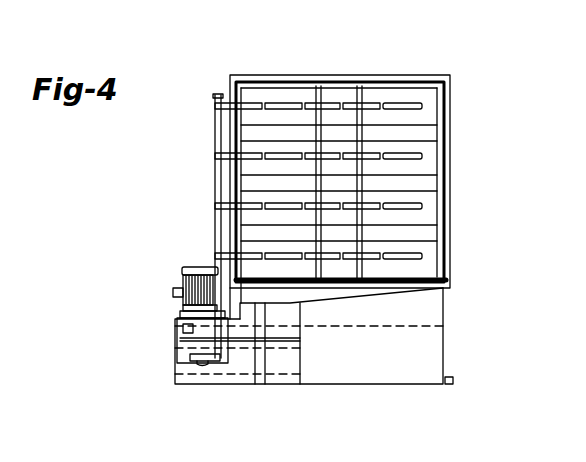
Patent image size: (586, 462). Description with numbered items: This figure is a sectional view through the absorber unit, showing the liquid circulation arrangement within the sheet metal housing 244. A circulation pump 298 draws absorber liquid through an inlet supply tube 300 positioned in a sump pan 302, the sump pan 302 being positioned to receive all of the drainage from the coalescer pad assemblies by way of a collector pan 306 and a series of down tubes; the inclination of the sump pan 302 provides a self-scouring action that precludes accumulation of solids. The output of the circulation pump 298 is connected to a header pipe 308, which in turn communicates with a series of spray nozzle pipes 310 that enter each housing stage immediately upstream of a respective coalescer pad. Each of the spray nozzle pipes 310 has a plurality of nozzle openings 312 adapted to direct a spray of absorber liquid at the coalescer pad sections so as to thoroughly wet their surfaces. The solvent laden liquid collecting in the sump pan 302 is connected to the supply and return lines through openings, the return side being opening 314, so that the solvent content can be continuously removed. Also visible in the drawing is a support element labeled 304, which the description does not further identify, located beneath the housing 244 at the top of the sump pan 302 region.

The sheet metal housing 244 is at (448, 298).
The circulation pump 298 is at (197, 268).
The inlet supply tube 300 is at (189, 369).
The sump pan 302 is at (300, 377).
The support plate 304 is at (348, 294).
The collector pan 306 is at (299, 359).
The header pipe 308 is at (214, 170).
The spray nozzle pipes 310 is at (230, 101).
The nozzle openings 312 is at (299, 103).
The return line opening 314 is at (177, 318).